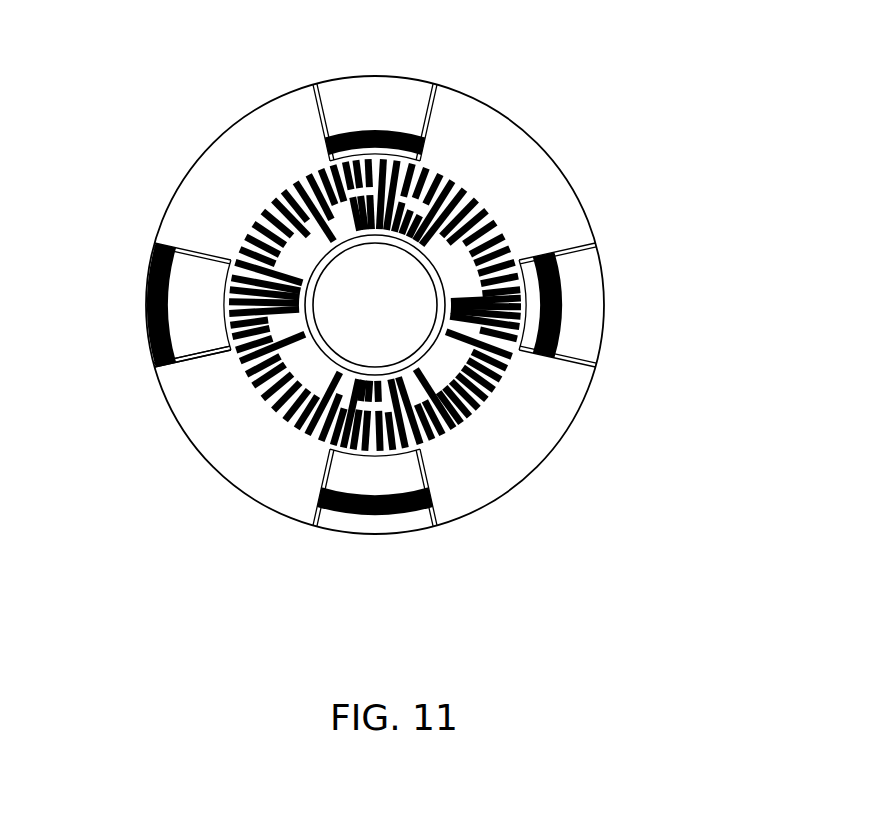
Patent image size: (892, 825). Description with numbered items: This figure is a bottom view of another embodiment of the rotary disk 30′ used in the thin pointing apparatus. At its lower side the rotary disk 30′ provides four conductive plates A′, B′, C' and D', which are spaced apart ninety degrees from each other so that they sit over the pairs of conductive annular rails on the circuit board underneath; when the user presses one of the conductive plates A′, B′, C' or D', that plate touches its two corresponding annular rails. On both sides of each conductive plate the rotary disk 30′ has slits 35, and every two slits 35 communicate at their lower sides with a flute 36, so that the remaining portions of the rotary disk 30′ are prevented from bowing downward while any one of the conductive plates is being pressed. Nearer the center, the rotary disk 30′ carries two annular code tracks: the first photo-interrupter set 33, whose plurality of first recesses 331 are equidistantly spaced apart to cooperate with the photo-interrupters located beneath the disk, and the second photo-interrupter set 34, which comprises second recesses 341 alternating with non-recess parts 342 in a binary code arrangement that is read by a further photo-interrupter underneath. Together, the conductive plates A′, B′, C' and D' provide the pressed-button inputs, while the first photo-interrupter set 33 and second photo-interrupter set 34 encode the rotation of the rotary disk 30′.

The rotary disk 30′ is at (217, 110).
The first photo-interrupter set 33 is at (444, 320).
The first recesses 331 is at (579, 391).
The second photo-interrupter set 34 is at (515, 457).
The second recesses 341 is at (457, 495).
The non-recess parts 342 is at (484, 466).
The slits 35 is at (144, 384).
The flute 36 is at (120, 305).
The conductive plate A′ is at (135, 305).
The conductive plate B′ is at (375, 525).
The conductive plate C' is at (596, 305).
The conductive plate D' is at (375, 80).